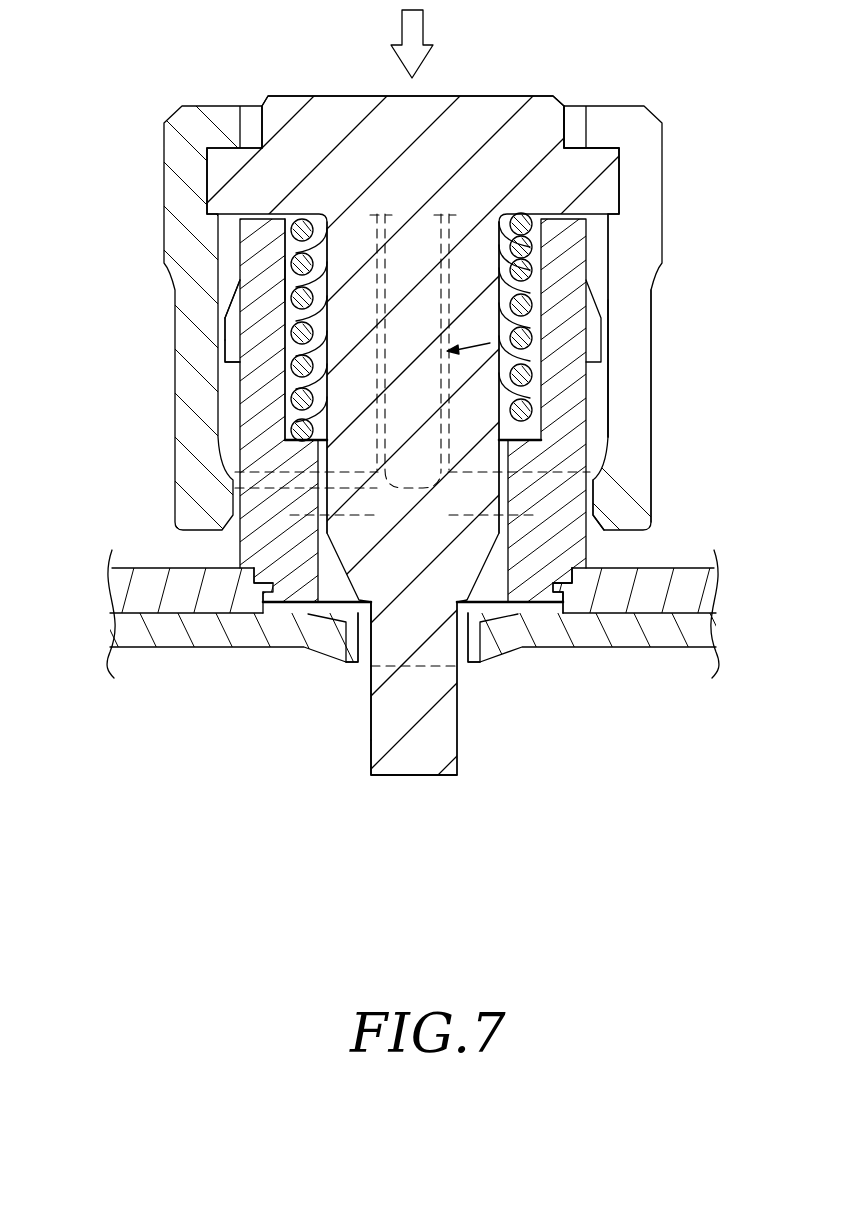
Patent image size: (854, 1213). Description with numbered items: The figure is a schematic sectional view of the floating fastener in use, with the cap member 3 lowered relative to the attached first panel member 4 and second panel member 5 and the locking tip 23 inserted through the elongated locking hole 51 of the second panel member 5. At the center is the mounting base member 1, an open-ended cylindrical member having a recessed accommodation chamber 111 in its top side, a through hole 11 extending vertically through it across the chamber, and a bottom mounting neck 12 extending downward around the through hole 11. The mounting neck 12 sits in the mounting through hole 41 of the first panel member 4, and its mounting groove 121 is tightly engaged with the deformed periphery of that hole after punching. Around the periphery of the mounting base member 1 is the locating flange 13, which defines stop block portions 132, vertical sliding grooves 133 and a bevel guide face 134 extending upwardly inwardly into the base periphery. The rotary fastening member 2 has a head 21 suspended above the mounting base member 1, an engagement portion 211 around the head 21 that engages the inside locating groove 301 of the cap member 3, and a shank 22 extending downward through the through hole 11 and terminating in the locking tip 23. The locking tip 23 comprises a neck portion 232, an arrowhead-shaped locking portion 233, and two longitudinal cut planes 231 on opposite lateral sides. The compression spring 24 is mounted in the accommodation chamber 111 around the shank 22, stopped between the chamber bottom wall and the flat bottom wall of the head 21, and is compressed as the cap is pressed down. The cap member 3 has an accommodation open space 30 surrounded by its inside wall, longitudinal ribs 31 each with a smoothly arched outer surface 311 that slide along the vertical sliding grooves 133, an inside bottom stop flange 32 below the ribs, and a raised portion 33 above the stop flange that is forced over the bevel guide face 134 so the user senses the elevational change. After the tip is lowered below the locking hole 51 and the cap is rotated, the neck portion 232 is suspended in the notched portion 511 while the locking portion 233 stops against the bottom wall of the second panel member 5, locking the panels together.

The mounting base member 1 is at (272, 508).
The through hole 11 is at (287, 251).
The recessed accommodation chamber 111 is at (282, 278).
The bottom mounting neck 12 is at (268, 598).
The mounting groove 121 is at (258, 584).
The locating flange 13 is at (97, 278).
The stop block portions 132 is at (229, 349).
The vertical sliding groove 133 is at (231, 327).
The bevel guide face 134 is at (229, 300).
The rotary fastening member 2 is at (493, 79).
The head 21 is at (343, 115).
The engagement portion 211 is at (237, 182).
The shank 22 is at (378, 503).
The locking tip 23 is at (298, 668).
The longitudinal cut planes 231 is at (372, 745).
The neck portion 232 is at (408, 645).
The arrowhead-shaped locking portion 233 is at (402, 707).
The compression spring 24 is at (300, 397).
The cap member 3 is at (643, 452).
The accommodation open space 30 is at (598, 284).
The inside locating groove 301 is at (608, 190).
The longitudinal ribs 31 is at (656, 328).
The smoothly arched outer surface 311 is at (634, 352).
The inside bottom stop flange 32 is at (600, 505).
The raised portion 33 is at (590, 395).
The first panel member 4 is at (690, 592).
The mounting through hole 41 is at (545, 567).
The second panel member 5 is at (598, 630).
The elongated locking hole 51 is at (458, 650).
The notched portion 511 is at (470, 640).